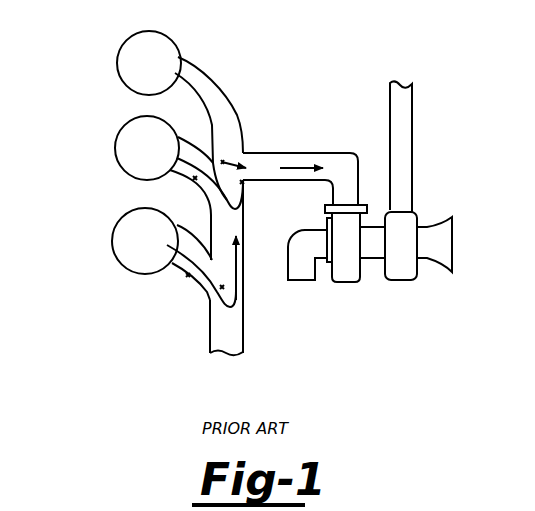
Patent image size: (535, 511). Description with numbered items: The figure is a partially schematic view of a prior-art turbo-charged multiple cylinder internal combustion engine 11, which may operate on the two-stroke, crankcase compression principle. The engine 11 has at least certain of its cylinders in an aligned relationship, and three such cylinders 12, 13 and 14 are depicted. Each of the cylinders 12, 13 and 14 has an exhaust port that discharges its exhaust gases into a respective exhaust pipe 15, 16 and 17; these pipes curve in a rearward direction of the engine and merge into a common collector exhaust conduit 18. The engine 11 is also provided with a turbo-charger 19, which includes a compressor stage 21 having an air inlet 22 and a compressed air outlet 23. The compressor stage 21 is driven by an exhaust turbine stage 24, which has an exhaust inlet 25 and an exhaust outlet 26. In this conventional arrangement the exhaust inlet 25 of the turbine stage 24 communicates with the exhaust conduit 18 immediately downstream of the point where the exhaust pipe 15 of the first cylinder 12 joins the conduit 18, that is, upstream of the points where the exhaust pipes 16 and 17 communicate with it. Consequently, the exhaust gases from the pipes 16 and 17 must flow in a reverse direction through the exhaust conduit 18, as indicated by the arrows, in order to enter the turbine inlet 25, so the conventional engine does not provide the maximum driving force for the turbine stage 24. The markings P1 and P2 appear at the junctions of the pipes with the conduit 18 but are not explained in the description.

The internal combustion engine 11 is at (324, 115).
The first cylinder 12 is at (118, 54).
The cylinder 13 is at (115, 140).
The cylinder 14 is at (113, 241).
The exhaust pipe 15 is at (203, 76).
The exhaust pipe 16 is at (195, 178).
The exhaust pipe 17 is at (175, 263).
The common collector exhaust conduit 18 is at (244, 293).
The turbo-charger 19 is at (404, 211).
The compressor stage 21 is at (416, 277).
The air inlet 22 is at (456, 240).
The compressed air outlet 23 is at (408, 118).
The exhaust turbine stage 24 is at (345, 268).
The exhaust inlet 25 is at (341, 116).
The exhaust outlet 26 is at (318, 262).
The first pressure point P1 is at (246, 186).
The second pressure point P2 is at (222, 287).